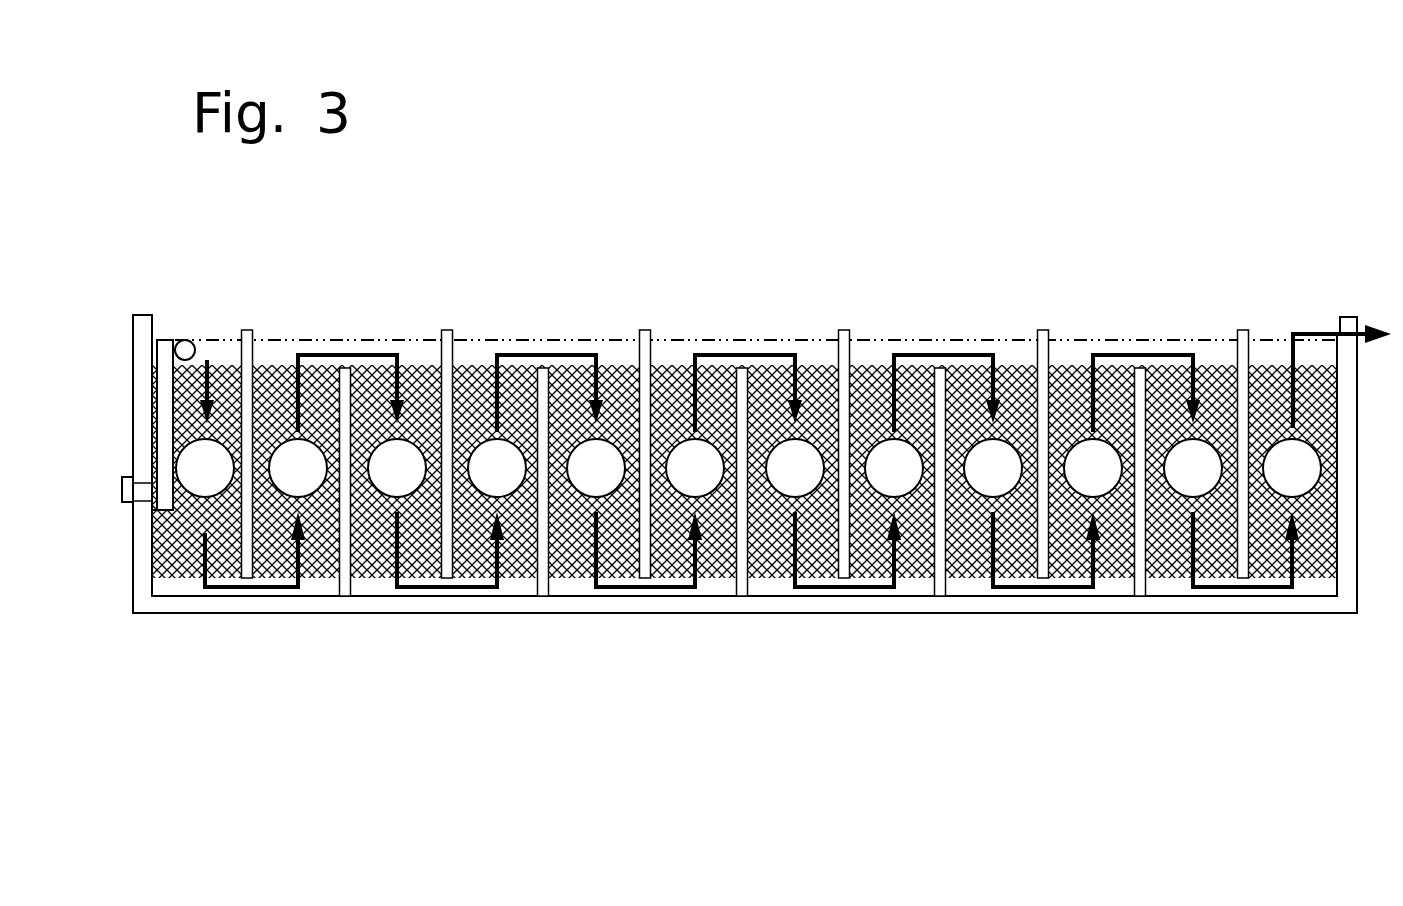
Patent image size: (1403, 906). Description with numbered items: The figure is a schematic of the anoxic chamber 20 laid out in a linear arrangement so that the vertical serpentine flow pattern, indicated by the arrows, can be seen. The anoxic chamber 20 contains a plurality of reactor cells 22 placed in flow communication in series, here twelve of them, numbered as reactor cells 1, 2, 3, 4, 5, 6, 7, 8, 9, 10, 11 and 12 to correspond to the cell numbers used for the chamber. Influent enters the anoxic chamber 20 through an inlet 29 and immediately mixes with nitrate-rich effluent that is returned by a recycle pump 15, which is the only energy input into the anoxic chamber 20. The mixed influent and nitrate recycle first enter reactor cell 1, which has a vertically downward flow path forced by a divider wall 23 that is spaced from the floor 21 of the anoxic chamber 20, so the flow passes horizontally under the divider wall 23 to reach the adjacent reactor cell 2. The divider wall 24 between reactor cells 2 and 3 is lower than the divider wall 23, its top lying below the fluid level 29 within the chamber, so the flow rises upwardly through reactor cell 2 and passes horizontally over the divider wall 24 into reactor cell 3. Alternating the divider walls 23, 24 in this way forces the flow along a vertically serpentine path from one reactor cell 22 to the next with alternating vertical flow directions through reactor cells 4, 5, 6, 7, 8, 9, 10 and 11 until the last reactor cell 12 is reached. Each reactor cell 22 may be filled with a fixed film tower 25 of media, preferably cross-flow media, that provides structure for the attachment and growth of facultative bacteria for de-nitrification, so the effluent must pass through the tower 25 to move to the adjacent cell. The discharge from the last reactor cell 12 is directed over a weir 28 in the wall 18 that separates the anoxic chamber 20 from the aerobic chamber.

The first reactor cell 1 is at (205, 468).
The second reactor cell 2 is at (298, 468).
The third reactor cell 3 is at (397, 468).
The fourth reactor cell 4 is at (497, 468).
The fifth reactor cell 5 is at (596, 468).
The sixth reactor cell 6 is at (695, 468).
The seventh reactor cell 7 is at (795, 468).
The eighth reactor cell 8 is at (894, 468).
The ninth reactor cell 9 is at (993, 468).
The tenth reactor cell 10 is at (1093, 468).
The eleventh reactor cell 11 is at (1193, 468).
The last reactor cell 12 is at (1292, 468).
The recycle pump 15 is at (123, 503).
The wall 18 is at (142, 323).
The anoxic chamber 20 is at (957, 232).
The floor 21 is at (1137, 610).
The reactor cell 22 is at (590, 292).
The divider wall 23 is at (440, 353).
The divider wall 24 is at (337, 587).
The fixed film tower 25 is at (520, 578).
The weir 28 is at (1332, 350).
The inlet 29 is at (185, 340).